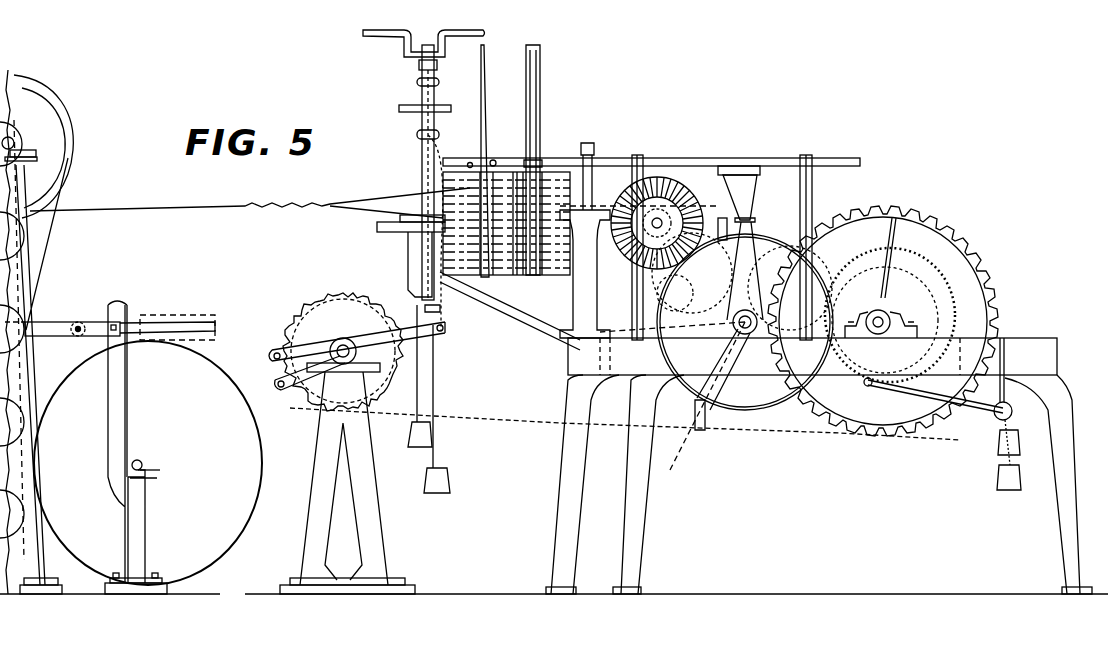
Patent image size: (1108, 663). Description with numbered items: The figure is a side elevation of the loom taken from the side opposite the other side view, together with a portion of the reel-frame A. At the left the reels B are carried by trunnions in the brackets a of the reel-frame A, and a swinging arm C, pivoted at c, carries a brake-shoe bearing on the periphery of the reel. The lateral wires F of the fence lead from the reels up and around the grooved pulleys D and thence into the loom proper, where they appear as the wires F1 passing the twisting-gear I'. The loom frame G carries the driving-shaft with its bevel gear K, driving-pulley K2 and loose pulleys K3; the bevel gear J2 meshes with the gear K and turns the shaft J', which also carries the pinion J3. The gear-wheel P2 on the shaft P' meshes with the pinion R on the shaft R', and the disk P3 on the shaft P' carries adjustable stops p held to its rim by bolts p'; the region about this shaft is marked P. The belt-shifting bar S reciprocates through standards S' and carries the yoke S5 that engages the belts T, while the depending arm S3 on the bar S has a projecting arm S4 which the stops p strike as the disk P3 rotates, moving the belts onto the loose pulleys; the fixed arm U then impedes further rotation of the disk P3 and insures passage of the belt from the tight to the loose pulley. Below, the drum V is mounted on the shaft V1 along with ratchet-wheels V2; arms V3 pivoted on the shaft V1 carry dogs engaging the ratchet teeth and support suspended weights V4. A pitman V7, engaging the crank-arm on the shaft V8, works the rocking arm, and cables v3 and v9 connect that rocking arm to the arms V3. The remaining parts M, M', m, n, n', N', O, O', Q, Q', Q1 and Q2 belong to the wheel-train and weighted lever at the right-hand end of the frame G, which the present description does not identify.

The grooved pulleys D is at (70, 143).
The lateral wires F is at (158, 206).
The swinging arms C is at (215, 325).
The pivot c is at (78, 318).
The reel-frame A is at (25, 447).
The brackets a is at (150, 470).
The reels B is at (148, 463).
The drum V is at (345, 305).
The shaft V1 is at (345, 335).
The ratchet-wheels V2 is at (300, 410).
The arms V3 is at (445, 335).
The weights V4 is at (430, 468).
The cable v3 is at (416, 232).
The cable v9 is at (415, 185).
The shaft V8 is at (448, 30).
The pitman V7 is at (436, 72).
The belts T is at (489, 120).
The yoke S5 is at (555, 150).
The belt-shifting bar S is at (651, 163).
The standards S' is at (726, 231).
The loose pulleys K3 is at (506, 223).
The bevel gear K is at (390, 232).
The driving-pulley K2 is at (525, 295).
The shaft J' is at (659, 222).
The bevel gear J2 is at (660, 218).
The pinion J3 is at (664, 231).
The twisting-gear I' is at (640, 167).
The gear-wheel P2 is at (752, 243).
The depending arm S3 is at (770, 192).
The projecting arm S4 is at (756, 220).
The lateral wires F1 is at (718, 198).
The adjustable stops p is at (705, 342).
The bolt p' is at (716, 419).
The wheel P is at (745, 322).
The shaft P' is at (675, 366).
The disk P3 is at (720, 428).
The pinion R is at (692, 273).
The shaft R' is at (689, 293).
The gear O is at (843, 301).
The arm U is at (765, 253).
The frame G is at (819, 466).
The gear wheel M is at (883, 334).
The hub M' is at (881, 313).
The pointer n is at (890, 300).
The ring m is at (920, 268).
The pin n' is at (964, 317).
The lever Q is at (938, 401).
The weight Q2 is at (1020, 442).
The weight Q1 is at (1021, 478).
The pivot Q' is at (925, 405).
The gear O' is at (843, 400).
The chain N' is at (625, 421).